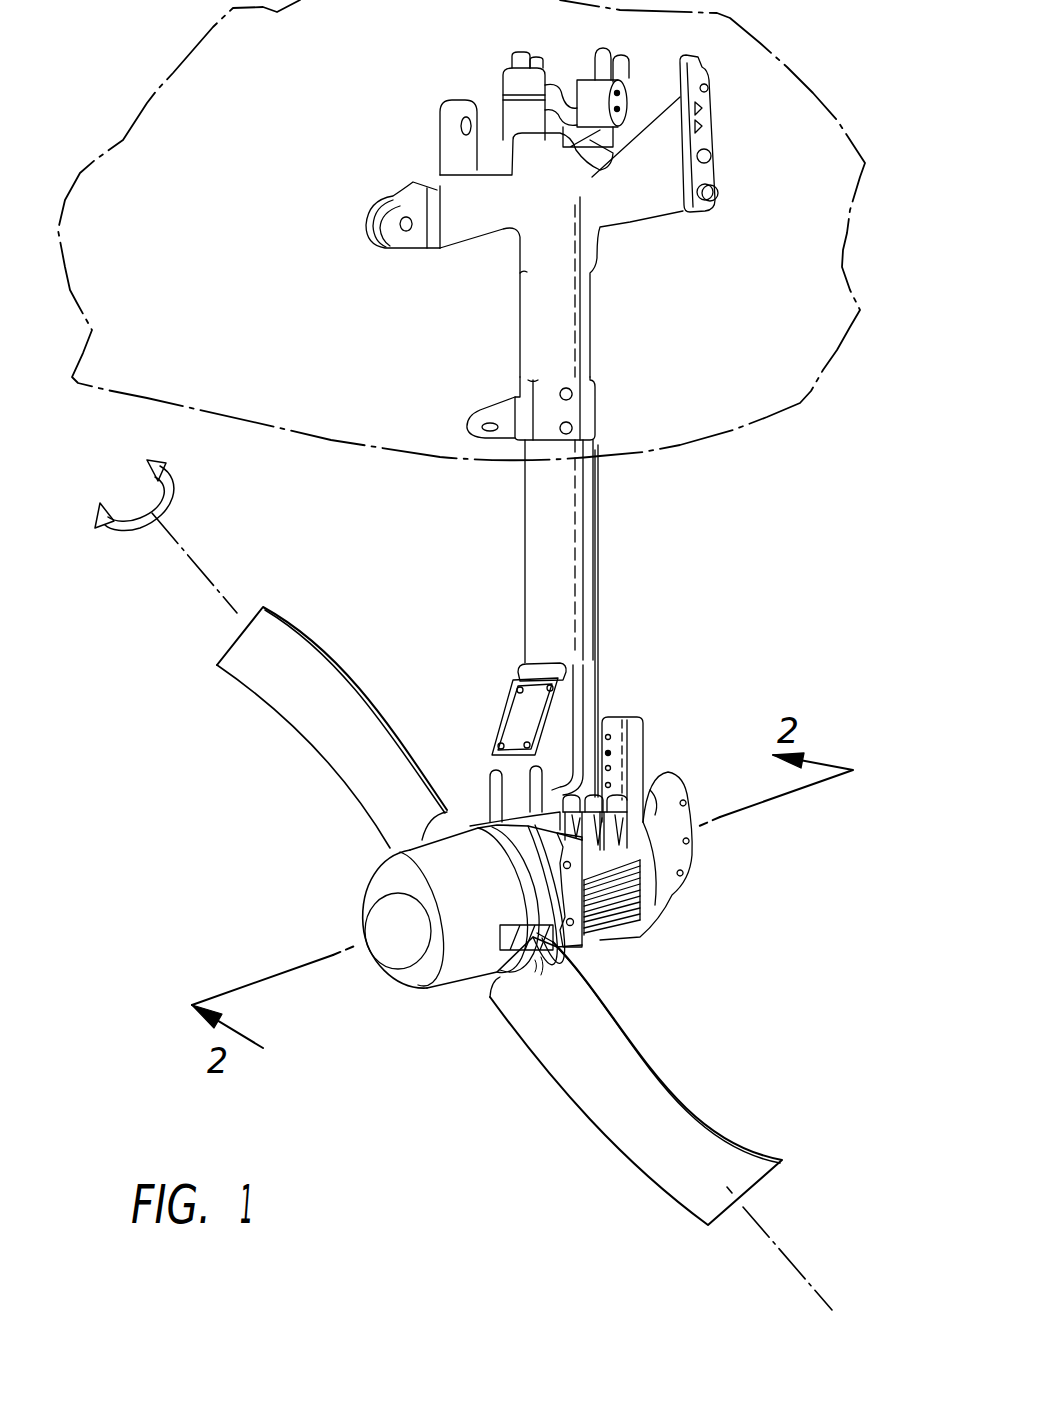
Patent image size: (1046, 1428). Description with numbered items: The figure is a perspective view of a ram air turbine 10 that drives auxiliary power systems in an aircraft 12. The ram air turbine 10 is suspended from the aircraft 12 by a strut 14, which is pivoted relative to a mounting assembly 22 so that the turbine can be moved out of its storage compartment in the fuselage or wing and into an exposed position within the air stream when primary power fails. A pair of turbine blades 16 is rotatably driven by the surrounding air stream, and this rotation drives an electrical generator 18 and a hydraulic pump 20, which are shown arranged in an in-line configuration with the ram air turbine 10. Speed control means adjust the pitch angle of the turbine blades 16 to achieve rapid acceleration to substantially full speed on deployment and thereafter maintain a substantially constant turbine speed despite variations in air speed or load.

The ram air turbine 10 is at (417, 1008).
The aircraft 12 is at (90, 157).
The strut 14 is at (570, 543).
The turbine blades 16 is at (303, 703).
The electrical generator 18 is at (647, 897).
The hydraulic pump 20 is at (660, 770).
The mounting assembly 22 is at (383, 190).